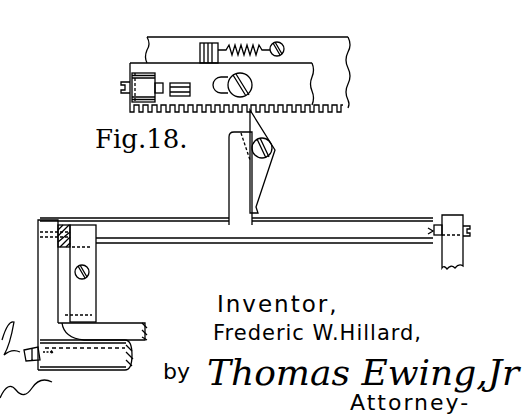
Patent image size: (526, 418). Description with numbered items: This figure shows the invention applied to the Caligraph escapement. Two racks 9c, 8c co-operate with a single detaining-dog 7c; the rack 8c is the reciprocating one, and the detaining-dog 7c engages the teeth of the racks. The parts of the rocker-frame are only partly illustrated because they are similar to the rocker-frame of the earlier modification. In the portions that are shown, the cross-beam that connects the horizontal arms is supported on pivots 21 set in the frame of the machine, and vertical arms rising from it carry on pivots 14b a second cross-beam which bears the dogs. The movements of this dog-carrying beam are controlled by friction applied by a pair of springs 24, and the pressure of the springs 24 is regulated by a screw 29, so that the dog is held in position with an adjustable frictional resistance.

The rack 9c is at (180, 33).
The reciprocating rack 8c is at (132, 73).
The detaining-dog 7c is at (263, 128).
The pivots 14b is at (59, 224).
The pair of springs 24 is at (90, 254).
The screw 29 is at (90, 274).
The pivots 21 is at (32, 347).